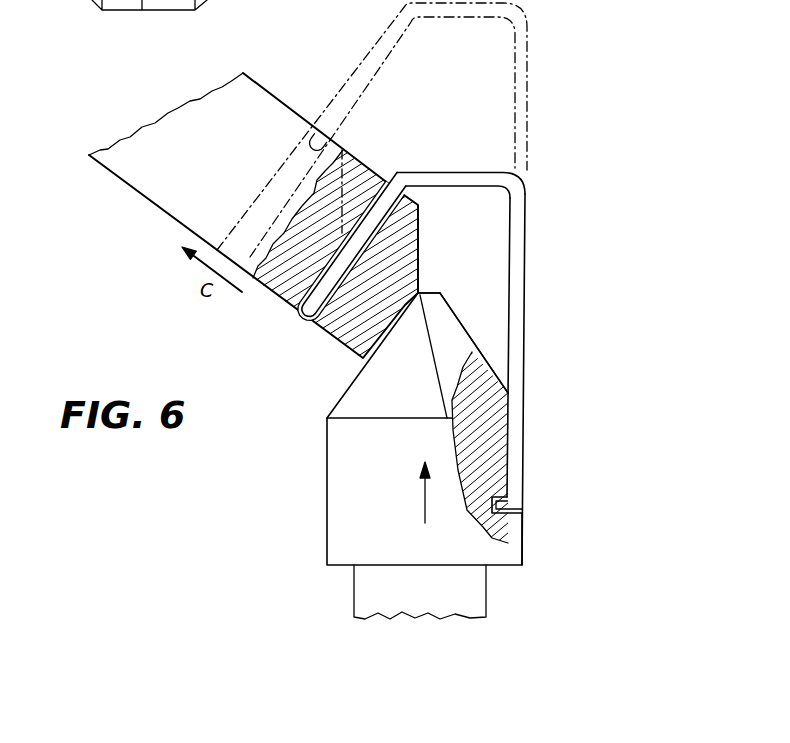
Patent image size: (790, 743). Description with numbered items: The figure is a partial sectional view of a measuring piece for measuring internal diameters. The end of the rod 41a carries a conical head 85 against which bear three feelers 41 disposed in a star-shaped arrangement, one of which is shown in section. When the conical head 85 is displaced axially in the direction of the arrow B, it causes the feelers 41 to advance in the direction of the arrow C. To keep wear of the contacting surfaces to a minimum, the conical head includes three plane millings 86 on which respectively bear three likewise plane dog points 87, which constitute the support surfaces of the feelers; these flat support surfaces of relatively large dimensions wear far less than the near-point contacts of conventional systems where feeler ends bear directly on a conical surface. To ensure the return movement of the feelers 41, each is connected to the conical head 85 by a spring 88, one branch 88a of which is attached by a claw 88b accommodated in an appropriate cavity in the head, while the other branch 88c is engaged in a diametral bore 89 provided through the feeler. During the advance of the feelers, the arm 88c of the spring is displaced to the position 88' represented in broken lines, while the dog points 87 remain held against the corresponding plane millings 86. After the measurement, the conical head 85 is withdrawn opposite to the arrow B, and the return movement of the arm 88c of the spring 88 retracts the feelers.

The feeler 41 is at (120, 176).
The rod 41a is at (360, 598).
The conical head 85 is at (394, 421).
The plane milling 86 is at (440, 322).
The dog point 87 is at (427, 292).
The spring 88 is at (453, 344).
The branch of spring 88a is at (523, 345).
The claw 88b is at (510, 507).
The arm of spring 88c is at (388, 203).
The displaced position of spring arm 88' is at (403, 130).
The diametral bore 89 is at (298, 313).